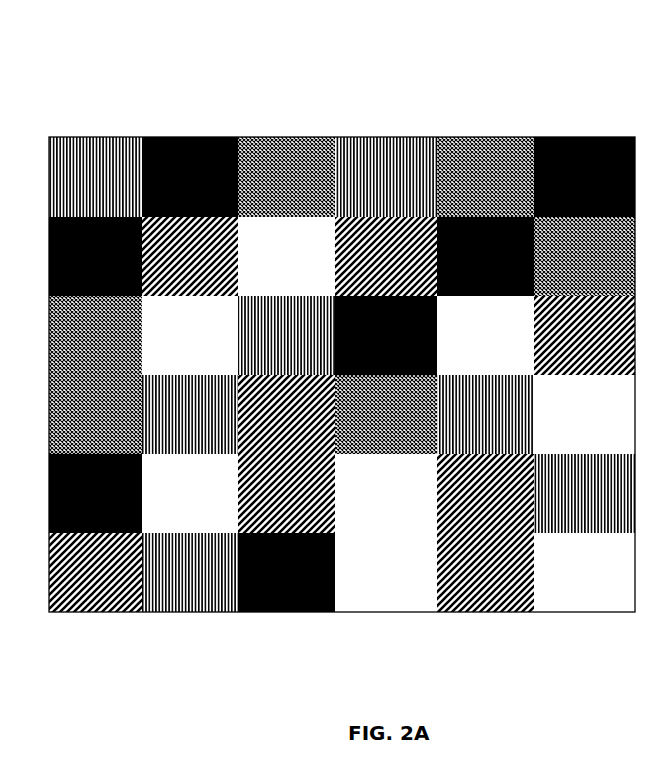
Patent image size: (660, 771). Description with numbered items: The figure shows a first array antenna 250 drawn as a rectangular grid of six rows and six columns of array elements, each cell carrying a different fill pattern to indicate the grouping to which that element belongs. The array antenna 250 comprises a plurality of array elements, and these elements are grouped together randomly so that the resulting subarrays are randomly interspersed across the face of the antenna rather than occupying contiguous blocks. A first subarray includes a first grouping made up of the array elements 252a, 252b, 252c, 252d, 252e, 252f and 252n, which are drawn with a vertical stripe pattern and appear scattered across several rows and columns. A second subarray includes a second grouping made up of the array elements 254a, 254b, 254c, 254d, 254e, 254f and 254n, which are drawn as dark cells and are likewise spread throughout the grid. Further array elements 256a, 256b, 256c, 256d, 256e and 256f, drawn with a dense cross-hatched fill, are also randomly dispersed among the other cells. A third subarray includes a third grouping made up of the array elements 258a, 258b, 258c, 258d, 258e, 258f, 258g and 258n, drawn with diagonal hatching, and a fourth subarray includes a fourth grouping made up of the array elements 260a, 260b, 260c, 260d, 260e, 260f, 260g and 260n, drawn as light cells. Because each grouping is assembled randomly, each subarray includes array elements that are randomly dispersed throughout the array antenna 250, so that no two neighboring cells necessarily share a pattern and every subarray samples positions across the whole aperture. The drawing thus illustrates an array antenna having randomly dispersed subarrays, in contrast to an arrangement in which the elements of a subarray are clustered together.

The first array antenna 250 is at (203, 61).
The array element 252a is at (119, 177).
The array element 252b is at (405, 177).
The array element 252c is at (308, 336).
The array element 252d is at (212, 415).
The array element 252e is at (507, 415).
The array element 252f is at (205, 573).
The array element 252n is at (604, 494).
The array element 254a is at (212, 177).
The array element 254b is at (604, 177).
The array element 254c is at (119, 257).
The array element 254d is at (507, 257).
The array element 254e is at (405, 336).
The array element 254f is at (112, 494).
The array element 254n is at (308, 573).
The array element 256a is at (308, 177).
The array element 256b is at (507, 177).
The array element 256c is at (604, 257).
The array element 256d is at (119, 336).
The array element 256e is at (119, 415).
The array element 256f is at (398, 415).
The array element 258a is at (212, 257).
The array element 258b is at (405, 257).
The array element 258c is at (604, 336).
The array element 258d is at (308, 415).
The array element 258e is at (308, 494).
The array element 258f is at (500, 494).
The array element 258g is at (119, 573).
The array element 258n is at (507, 573).
The array element 260a is at (308, 257).
The array element 260b is at (212, 336).
The array element 260c is at (507, 336).
The array element 260d is at (604, 415).
The array element 260e is at (212, 494).
The array element 260f is at (398, 494).
The array element 260g is at (405, 573).
The array element 260n is at (604, 573).